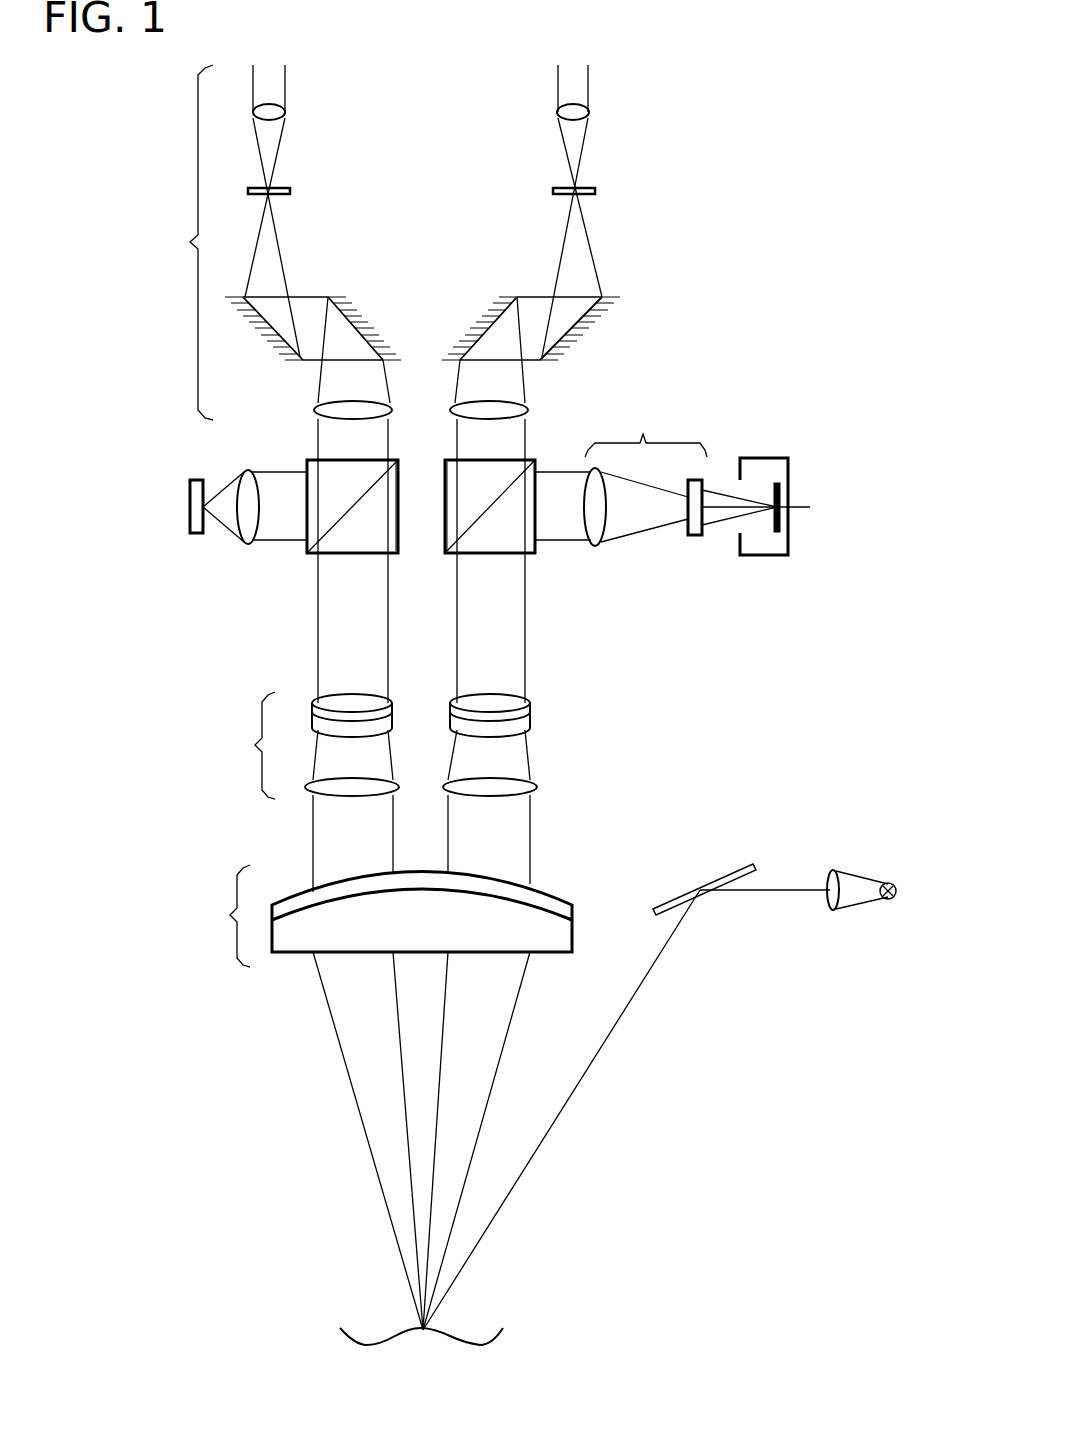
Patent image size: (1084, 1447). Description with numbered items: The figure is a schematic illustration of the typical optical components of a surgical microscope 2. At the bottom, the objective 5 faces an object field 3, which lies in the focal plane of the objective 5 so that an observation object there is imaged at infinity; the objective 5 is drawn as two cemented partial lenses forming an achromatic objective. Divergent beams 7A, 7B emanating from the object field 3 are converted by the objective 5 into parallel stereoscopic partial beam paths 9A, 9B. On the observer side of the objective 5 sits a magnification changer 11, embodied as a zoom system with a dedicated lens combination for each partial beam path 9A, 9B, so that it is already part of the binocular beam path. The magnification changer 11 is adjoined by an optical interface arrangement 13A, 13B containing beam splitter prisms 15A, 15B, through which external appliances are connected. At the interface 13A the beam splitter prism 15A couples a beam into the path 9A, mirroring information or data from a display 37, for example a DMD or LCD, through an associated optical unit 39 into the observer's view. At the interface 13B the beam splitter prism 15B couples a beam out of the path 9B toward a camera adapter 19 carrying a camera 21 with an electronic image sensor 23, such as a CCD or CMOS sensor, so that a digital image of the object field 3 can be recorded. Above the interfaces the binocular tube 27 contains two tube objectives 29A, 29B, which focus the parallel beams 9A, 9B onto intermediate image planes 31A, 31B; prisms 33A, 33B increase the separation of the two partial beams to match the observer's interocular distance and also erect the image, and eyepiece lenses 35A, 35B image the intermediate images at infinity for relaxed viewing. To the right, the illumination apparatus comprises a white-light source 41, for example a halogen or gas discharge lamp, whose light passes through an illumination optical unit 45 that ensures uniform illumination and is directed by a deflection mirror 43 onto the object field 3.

The surgical microscope 2 is at (696, 312).
The object field 3 is at (437, 1330).
The objective 5 is at (384, 916).
The divergent beam 7A is at (350, 1085).
The divergent beam 7B is at (515, 1013).
The stereoscopic partial beam path 9A is at (310, 835).
The stereoscopic partial beam path 9B is at (533, 835).
The magnification changer 11 is at (374, 745).
The optical interface 13A is at (345, 545).
The optical interface 13B is at (503, 545).
The beam splitter prism 15A is at (400, 545).
The beam splitter prism 15B is at (443, 495).
The camera adapter 19 is at (621, 469).
The camera 21 is at (762, 457).
The electronic image sensor 23 is at (782, 505).
The binocular tube 27 is at (180, 242).
The tube objective 29A is at (313, 410).
The tube objective 29B is at (530, 410).
The intermediate image plane 31A is at (292, 191).
The intermediate image plane 31B is at (597, 191).
The prism 33A is at (313, 290).
The prism 33B is at (529, 290).
The eyepiece lens 35A is at (288, 112).
The eyepiece lens 35B is at (592, 112).
The display 37 is at (188, 507).
The optical unit 39 is at (244, 470).
The white-light source 41 is at (897, 888).
The deflection mirror 43 is at (720, 872).
The illumination optical unit 45 is at (868, 877).